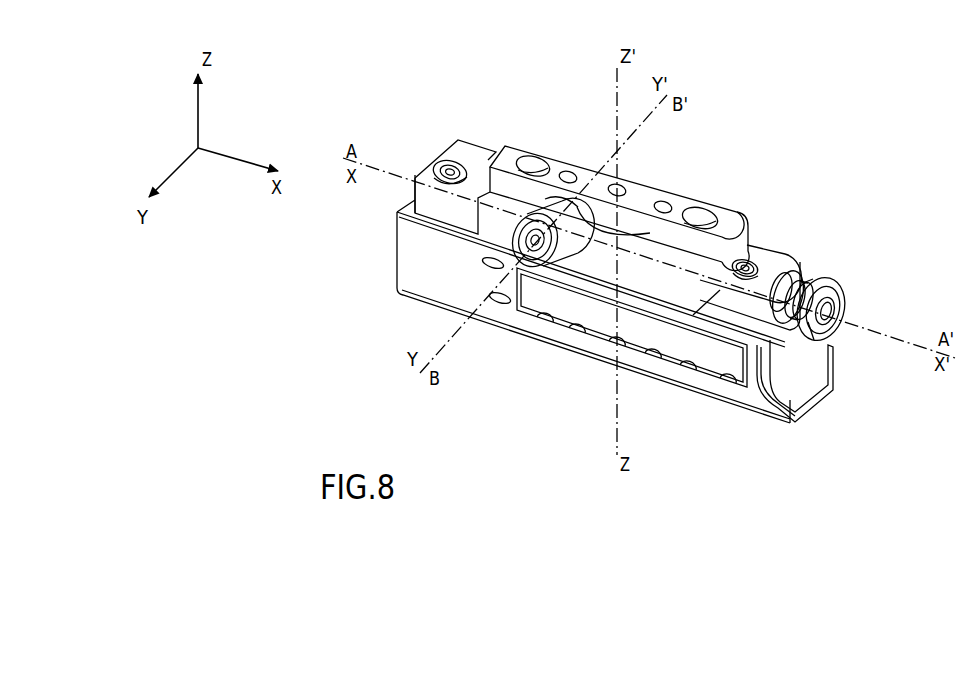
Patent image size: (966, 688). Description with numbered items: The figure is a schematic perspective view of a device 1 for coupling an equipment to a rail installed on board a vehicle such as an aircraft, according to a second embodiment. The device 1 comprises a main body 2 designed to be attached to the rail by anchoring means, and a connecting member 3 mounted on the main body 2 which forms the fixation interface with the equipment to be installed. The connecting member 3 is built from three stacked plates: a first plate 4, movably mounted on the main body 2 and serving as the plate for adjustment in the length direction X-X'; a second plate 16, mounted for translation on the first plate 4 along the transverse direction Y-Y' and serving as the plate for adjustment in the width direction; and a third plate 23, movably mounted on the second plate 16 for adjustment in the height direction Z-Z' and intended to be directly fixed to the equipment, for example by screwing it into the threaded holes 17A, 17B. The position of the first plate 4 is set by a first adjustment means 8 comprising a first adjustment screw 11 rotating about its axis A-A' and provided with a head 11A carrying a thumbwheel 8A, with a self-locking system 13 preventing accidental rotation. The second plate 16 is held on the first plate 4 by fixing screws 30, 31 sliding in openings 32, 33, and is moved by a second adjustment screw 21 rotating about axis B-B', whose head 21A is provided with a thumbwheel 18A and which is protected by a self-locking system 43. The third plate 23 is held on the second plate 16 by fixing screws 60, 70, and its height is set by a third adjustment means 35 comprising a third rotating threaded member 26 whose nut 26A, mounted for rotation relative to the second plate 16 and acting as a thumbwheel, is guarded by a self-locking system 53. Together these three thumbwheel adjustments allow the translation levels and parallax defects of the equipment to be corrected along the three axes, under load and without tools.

The device 1 is at (369, 295).
The main body 2 is at (730, 406).
The connecting member 3 is at (773, 227).
The first plate 4 is at (556, 281).
The first adjustment means 8 is at (845, 328).
The thumbwheel 8A is at (806, 294).
The first adjustment screw 11 is at (808, 300).
The head 11A is at (806, 334).
The self-locking system 13 is at (807, 268).
The second plate 16 is at (784, 242).
The threaded hole 17A is at (569, 172).
The threaded hole 17B is at (667, 200).
The thumbwheel 18A is at (502, 238).
The second adjustment screw 21 is at (520, 262).
The head 21A is at (549, 218).
The third plate 23 is at (750, 216).
The third rotating threaded member 26 is at (566, 216).
The nut 26A is at (614, 240).
The fixing screw 30 is at (735, 277).
The fixing screw 31 is at (408, 201).
The opening 32 is at (749, 284).
The opening 33 is at (449, 160).
The third adjustment means 35 is at (599, 226).
The self-locking system 43 is at (534, 195).
The self-locking system 53 is at (614, 230).
The fixing screw 60 is at (702, 214).
The fixing screw 70 is at (531, 162).